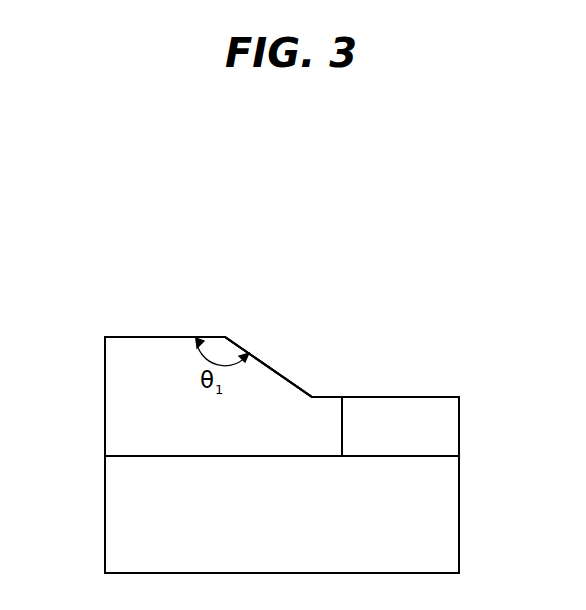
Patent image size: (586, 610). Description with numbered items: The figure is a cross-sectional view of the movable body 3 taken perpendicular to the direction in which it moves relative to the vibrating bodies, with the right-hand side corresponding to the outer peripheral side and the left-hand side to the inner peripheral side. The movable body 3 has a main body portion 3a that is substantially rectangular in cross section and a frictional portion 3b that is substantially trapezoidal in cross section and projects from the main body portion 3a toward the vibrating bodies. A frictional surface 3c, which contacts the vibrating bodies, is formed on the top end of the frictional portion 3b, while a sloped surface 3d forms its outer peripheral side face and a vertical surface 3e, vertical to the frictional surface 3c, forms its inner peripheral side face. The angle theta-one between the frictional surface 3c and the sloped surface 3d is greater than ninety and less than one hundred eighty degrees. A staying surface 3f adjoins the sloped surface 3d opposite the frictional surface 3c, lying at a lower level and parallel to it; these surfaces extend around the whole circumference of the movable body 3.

The movable body 3 is at (284, 292).
The main body portion 3a is at (443, 500).
The frictional portion 3b is at (120, 370).
The frictional surface 3c is at (160, 337).
The sloped surface 3d is at (278, 373).
The vertical surface 3e is at (105, 432).
The staying surface 3f is at (408, 397).